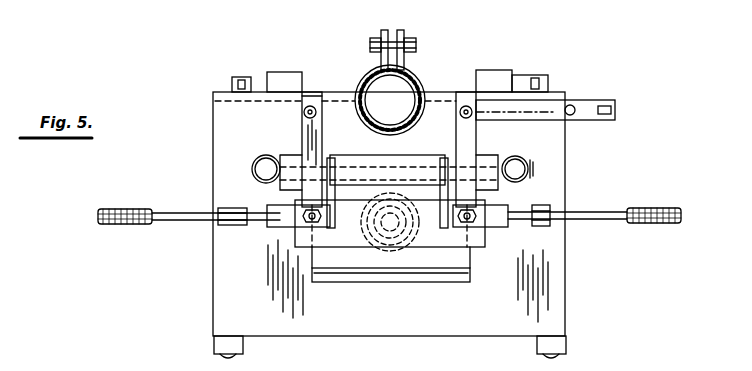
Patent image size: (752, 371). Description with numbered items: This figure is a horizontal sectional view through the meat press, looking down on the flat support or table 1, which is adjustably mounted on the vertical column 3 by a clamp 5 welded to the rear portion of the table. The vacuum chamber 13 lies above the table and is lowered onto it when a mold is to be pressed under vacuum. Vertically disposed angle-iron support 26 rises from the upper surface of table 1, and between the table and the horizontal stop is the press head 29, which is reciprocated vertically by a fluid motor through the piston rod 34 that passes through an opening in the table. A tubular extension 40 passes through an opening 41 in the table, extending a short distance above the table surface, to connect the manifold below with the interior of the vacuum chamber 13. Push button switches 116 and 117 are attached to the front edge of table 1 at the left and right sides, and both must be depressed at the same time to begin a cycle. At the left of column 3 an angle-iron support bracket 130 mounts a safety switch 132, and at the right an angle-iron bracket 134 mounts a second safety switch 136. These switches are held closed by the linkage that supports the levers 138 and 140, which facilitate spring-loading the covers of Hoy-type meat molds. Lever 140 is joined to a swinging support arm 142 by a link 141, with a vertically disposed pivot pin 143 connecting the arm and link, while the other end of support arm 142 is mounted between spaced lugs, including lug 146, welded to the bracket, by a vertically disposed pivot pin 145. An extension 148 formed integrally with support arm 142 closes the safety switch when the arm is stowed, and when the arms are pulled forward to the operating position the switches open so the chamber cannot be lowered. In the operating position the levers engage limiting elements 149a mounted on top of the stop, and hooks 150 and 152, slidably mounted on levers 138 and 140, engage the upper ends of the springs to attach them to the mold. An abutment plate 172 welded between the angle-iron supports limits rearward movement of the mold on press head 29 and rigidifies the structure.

The table 1 is at (543, 302).
The column 3 is at (374, 72).
The clamp 5 is at (382, 32).
The vacuum chamber 13 is at (194, 369).
The angle-iron support 26 is at (284, 160).
The press head 29 is at (362, 276).
The piston rod 34 is at (367, 234).
The tubular extension 40 is at (252, 170).
The opening 41 is at (256, 179).
The push button switch 116 is at (222, 346).
The push button switch 117 is at (558, 346).
The angle-iron support bracket 130 is at (306, 74).
The safety switch 132 is at (240, 77).
The angle-iron bracket 134 is at (476, 80).
The safety switch 136 is at (545, 83).
The lever 138 is at (164, 224).
The lever 140 is at (628, 223).
The link 141 is at (592, 107).
The swinging support arm 142 is at (306, 150).
The pivot pin 143 is at (470, 222).
The pivot pin 145 is at (318, 115).
The lug 146 is at (305, 106).
The extension 148 is at (528, 78).
The limiting element 149a is at (338, 214).
The hook 150 is at (232, 227).
The hook 152 is at (538, 225).
The abutment plate 172 is at (398, 175).